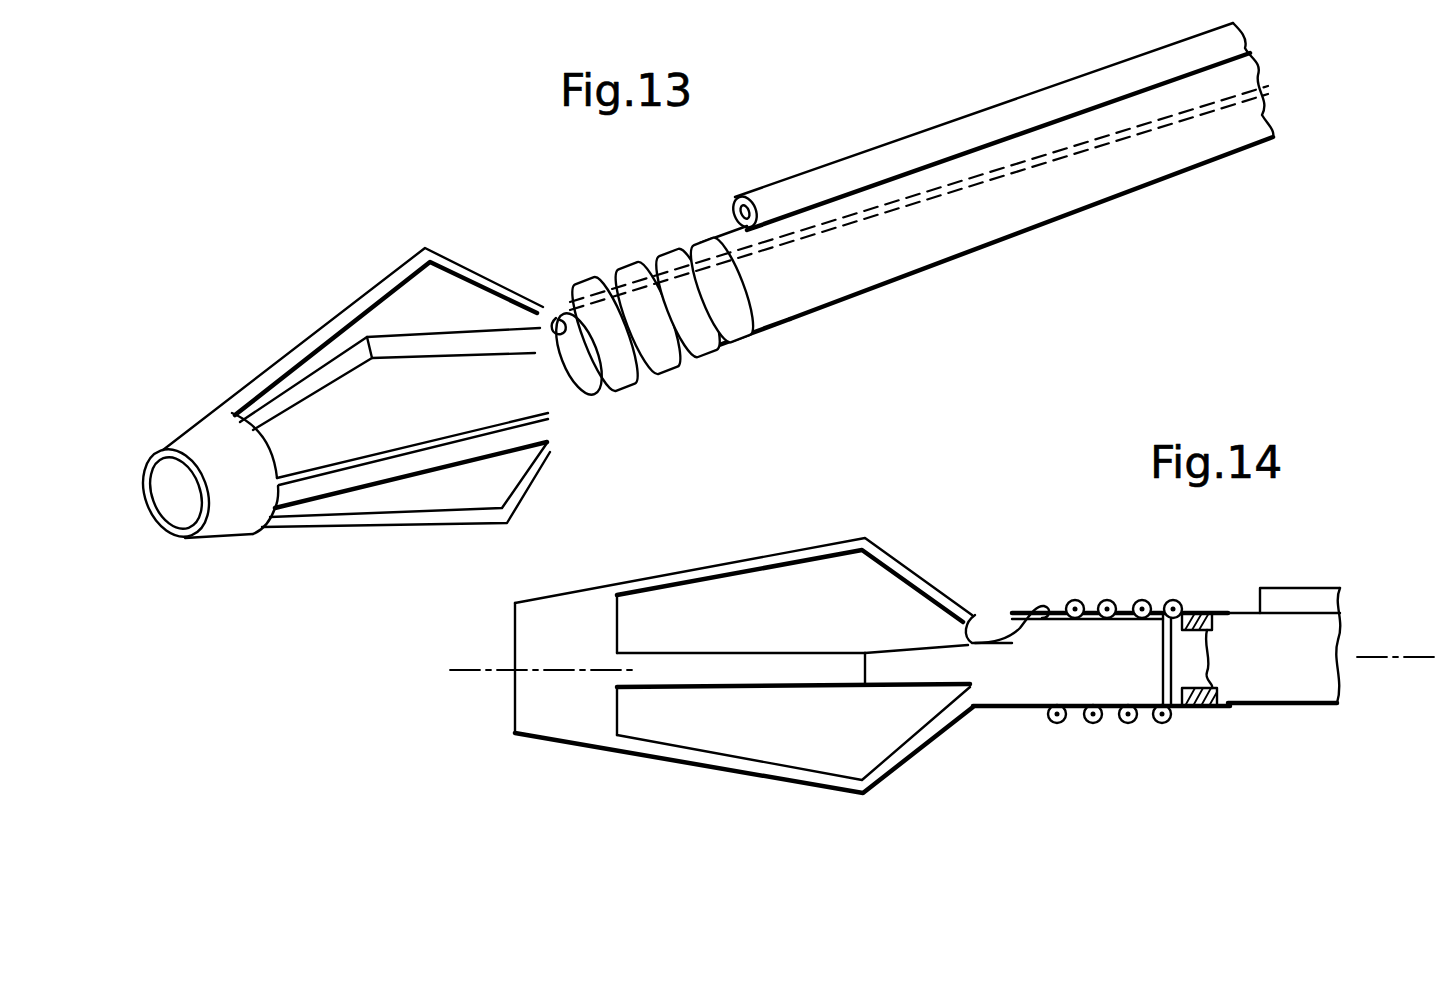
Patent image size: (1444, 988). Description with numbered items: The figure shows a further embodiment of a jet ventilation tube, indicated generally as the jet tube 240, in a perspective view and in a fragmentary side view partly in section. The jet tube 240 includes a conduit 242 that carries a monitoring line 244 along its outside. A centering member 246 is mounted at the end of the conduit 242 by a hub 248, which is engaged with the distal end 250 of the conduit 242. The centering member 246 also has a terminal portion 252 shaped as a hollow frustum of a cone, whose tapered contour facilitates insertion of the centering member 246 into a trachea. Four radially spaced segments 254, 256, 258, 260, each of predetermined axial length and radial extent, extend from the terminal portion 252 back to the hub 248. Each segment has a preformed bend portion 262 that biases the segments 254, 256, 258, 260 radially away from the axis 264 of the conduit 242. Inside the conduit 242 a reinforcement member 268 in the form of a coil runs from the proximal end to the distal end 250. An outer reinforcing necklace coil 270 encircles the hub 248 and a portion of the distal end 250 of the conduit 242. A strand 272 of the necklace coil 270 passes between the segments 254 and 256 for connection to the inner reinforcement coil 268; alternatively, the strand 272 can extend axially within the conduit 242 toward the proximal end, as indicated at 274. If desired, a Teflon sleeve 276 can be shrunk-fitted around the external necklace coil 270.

In FIG. 13, the jet tube 240 is at (954, 120).
In FIG. 14, the jet tube 240 is at (990, 549).
In FIG. 13, the conduit 242 is at (1097, 203).
In FIG. 14, the conduit 242 is at (1317, 710).
In FIG. 13, the monitoring line 244 is at (1073, 77).
In FIG. 14, the monitoring line 244 is at (1297, 593).
In FIG. 13, the centering member 246 is at (388, 264).
In FIG. 14, the centering member 246 is at (650, 578).
In FIG. 13, the hub 248 is at (560, 312).
In FIG. 14, the hub 248 is at (1002, 693).
In FIG. 13, the distal end 250 is at (747, 340).
In FIG. 14, the distal end 250 is at (1180, 713).
In FIG. 13, the terminal portion 252 is at (183, 440).
In FIG. 14, the terminal portion 252 is at (560, 737).
In FIG. 13, the segment 254 is at (315, 337).
In FIG. 14, the segment 254 is at (765, 555).
In FIG. 13, the segment 256 is at (378, 460).
In FIG. 14, the segment 256 is at (725, 657).
In FIG. 13, the segment 258 is at (399, 527).
In FIG. 14, the segment 258 is at (697, 763).
In FIG. 13, the segment 260 is at (450, 353).
In FIG. 13, the preformed bend portion 262 is at (430, 247).
In FIG. 14, the preformed bend portion 262 is at (863, 533).
In FIG. 14, the axis 264 is at (1382, 653).
In FIG. 14, the reinforcement member 268 is at (1218, 672).
In FIG. 13, the necklace coil 270 is at (667, 373).
In FIG. 14, the necklace coil 270 is at (1075, 600).
In FIG. 13, the strand 272 is at (572, 395).
In FIG. 14, the strand 272 is at (1003, 620).
In FIG. 13, the axially extending strand portion 274 is at (963, 197).
In FIG. 14, the Teflon sleeve 276 is at (1127, 603).